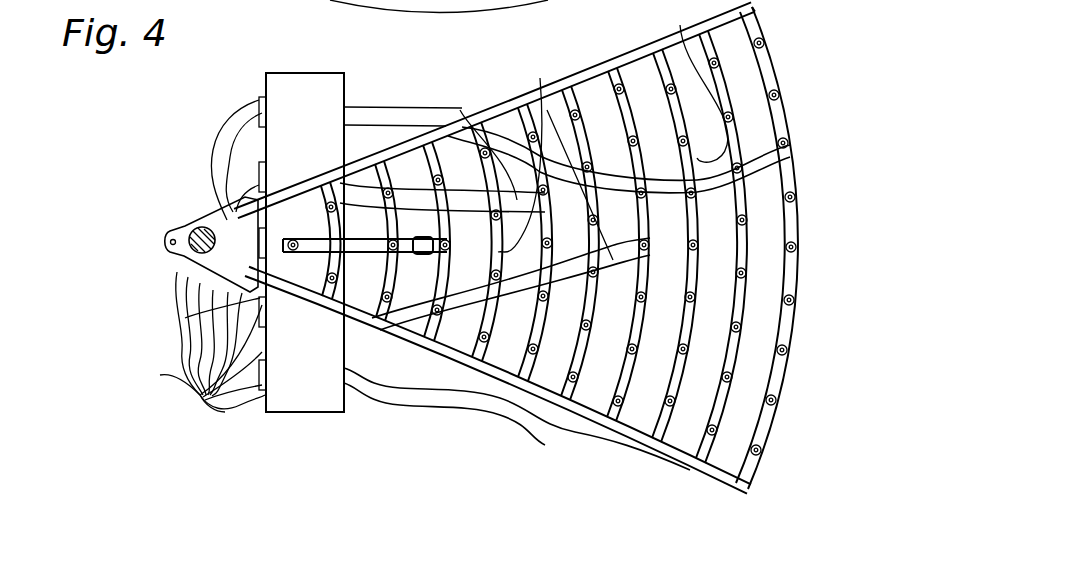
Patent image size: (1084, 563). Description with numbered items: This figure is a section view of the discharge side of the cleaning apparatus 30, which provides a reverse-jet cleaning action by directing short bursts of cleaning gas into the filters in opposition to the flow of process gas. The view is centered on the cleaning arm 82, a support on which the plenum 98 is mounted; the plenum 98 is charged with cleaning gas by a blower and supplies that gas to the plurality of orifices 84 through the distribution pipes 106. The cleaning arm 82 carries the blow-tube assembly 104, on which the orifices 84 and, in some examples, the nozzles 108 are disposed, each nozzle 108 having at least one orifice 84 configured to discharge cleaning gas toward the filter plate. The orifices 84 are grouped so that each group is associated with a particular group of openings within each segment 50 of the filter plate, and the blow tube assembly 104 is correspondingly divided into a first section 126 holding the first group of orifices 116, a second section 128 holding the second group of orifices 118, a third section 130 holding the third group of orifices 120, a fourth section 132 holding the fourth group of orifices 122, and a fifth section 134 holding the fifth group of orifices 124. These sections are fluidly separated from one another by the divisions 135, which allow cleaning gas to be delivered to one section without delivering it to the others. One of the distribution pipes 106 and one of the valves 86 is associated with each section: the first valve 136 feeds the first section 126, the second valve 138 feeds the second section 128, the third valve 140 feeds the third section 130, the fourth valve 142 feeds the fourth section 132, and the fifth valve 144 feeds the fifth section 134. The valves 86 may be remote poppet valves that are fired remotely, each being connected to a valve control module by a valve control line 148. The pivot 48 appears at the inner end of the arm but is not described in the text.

The cleaning apparatus 30 is at (115, 141).
The pivot bolt 48 is at (190, 252).
The segment 50 is at (324, 5).
The cleaning arm 82 is at (826, 32).
The orifices 84 is at (487, 331).
The valves 86 is at (274, 233).
The plenum 98 is at (325, 84).
The blow-tube assembly 104 is at (788, 340).
The distribution pipes 106 is at (478, 100).
The nozzles 108 is at (796, 193).
The first group of orifices 116 is at (358, 410).
The second group of orifices 118 is at (505, 433).
The third group of orifices 120 is at (608, 442).
The fourth group of orifices 122 is at (665, 460).
The fifth group of orifices 124 is at (795, 388).
The first section 126 is at (365, 313).
The second section 128 is at (487, 360).
The third section 130 is at (590, 407).
The fourth section 132 is at (673, 451).
The fifth section 134 is at (768, 74).
The divisions 135 is at (594, 130).
The first valve 136 is at (240, 247).
The second valve 138 is at (257, 187).
The third valve 140 is at (185, 318).
The fourth valve 142 is at (225, 410).
The fifth valve 144 is at (259, 103).
The valve control line 148 is at (193, 362).